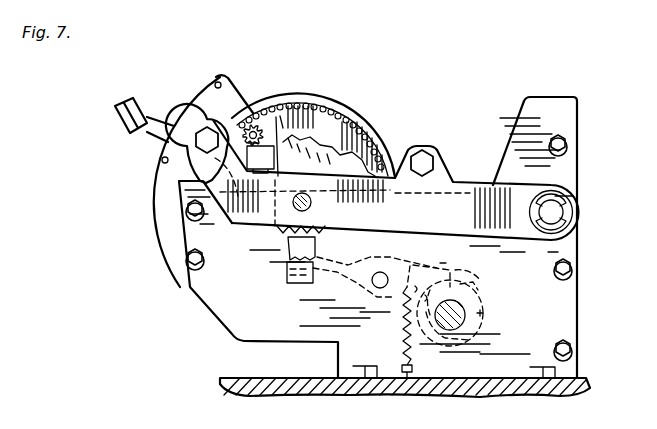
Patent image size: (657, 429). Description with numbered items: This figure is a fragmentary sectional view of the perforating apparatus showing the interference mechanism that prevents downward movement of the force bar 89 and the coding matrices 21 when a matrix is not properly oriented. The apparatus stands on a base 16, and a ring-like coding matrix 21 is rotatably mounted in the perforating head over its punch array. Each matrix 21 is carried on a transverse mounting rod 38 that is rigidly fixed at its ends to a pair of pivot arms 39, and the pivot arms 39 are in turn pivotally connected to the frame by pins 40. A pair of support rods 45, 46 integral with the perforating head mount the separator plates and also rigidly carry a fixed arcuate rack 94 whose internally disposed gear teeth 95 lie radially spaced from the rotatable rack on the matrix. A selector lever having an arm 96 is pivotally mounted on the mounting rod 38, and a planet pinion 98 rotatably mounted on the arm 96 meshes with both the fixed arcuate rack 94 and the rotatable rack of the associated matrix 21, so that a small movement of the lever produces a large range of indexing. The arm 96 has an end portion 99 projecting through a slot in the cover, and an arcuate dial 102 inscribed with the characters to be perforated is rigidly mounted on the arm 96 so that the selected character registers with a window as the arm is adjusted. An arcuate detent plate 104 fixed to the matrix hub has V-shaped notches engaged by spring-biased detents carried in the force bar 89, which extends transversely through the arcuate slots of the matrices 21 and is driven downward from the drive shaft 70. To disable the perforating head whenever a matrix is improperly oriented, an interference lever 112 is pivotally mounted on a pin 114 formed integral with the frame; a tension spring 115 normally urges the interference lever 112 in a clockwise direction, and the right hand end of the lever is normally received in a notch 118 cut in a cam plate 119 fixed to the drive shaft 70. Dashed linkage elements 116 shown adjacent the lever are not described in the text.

The base 16 is at (424, 398).
The coding matrix 21 is at (355, 146).
The mounting rod 38 is at (312, 203).
The pivot arm 39 is at (452, 205).
The pin 40 is at (558, 213).
The support rod 45 is at (200, 140).
The support rod 46 is at (425, 160).
The drive shaft 70 is at (466, 320).
The force bar 89 is at (288, 256).
The fixed arcuate rack 94 is at (336, 97).
The gear teeth 95 is at (307, 112).
The selector arm 96 is at (210, 95).
The planet pinion 98 is at (257, 125).
The end portion 99 is at (121, 118).
The arcuate dial 102 is at (153, 210).
The detent plate 104 is at (312, 165).
The interference lever 112 is at (408, 261).
The pin 114 is at (377, 287).
The tension spring 115 is at (403, 344).
The link 116 is at (448, 264).
The notch 118 is at (463, 288).
The cam plate 119 is at (484, 313).